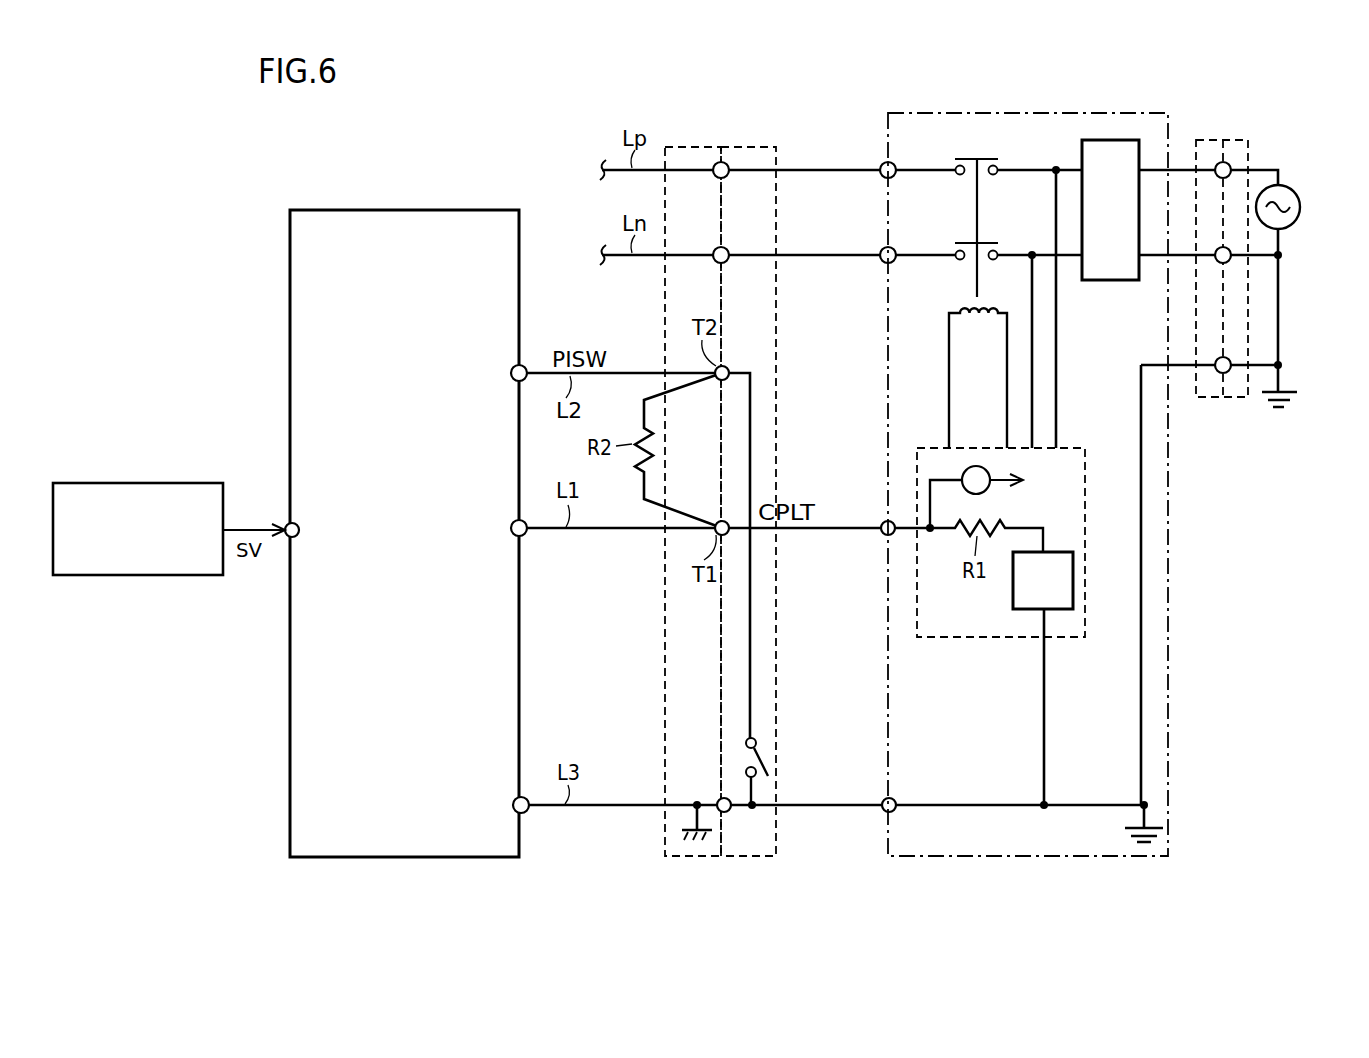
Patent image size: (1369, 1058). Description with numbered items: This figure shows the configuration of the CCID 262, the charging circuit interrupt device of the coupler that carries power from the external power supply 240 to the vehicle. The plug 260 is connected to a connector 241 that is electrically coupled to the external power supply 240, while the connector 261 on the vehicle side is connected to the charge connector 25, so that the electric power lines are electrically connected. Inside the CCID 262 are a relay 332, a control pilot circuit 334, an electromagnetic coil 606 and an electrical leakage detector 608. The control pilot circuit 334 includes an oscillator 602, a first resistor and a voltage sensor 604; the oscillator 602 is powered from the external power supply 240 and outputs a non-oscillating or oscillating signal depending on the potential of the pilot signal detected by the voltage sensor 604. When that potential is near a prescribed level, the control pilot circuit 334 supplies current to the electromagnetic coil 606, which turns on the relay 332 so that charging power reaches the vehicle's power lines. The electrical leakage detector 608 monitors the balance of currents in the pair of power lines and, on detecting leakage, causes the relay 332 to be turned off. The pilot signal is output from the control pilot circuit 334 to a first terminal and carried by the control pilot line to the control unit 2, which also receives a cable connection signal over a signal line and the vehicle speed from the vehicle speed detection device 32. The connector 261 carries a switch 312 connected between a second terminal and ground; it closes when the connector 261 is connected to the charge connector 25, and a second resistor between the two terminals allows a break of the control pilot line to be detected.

The control unit 2 is at (405, 210).
The vehicle speed detection device 32 is at (140, 483).
The charge connector 25 is at (686, 147).
The connector 261 is at (748, 147).
The CCID 262 is at (1065, 113).
The plug 260 is at (1208, 140).
The connector 241 is at (1237, 140).
The external power supply 240 is at (1292, 192).
The relay 332 is at (984, 136).
The electromagnetic coil 606 is at (963, 303).
The electrical leakage detector 608 is at (1113, 282).
The voltage sensor 604 is at (995, 490).
The oscillator 602 is at (1013, 598).
The control pilot circuit 334 is at (1001, 568).
The switch 312 is at (762, 758).